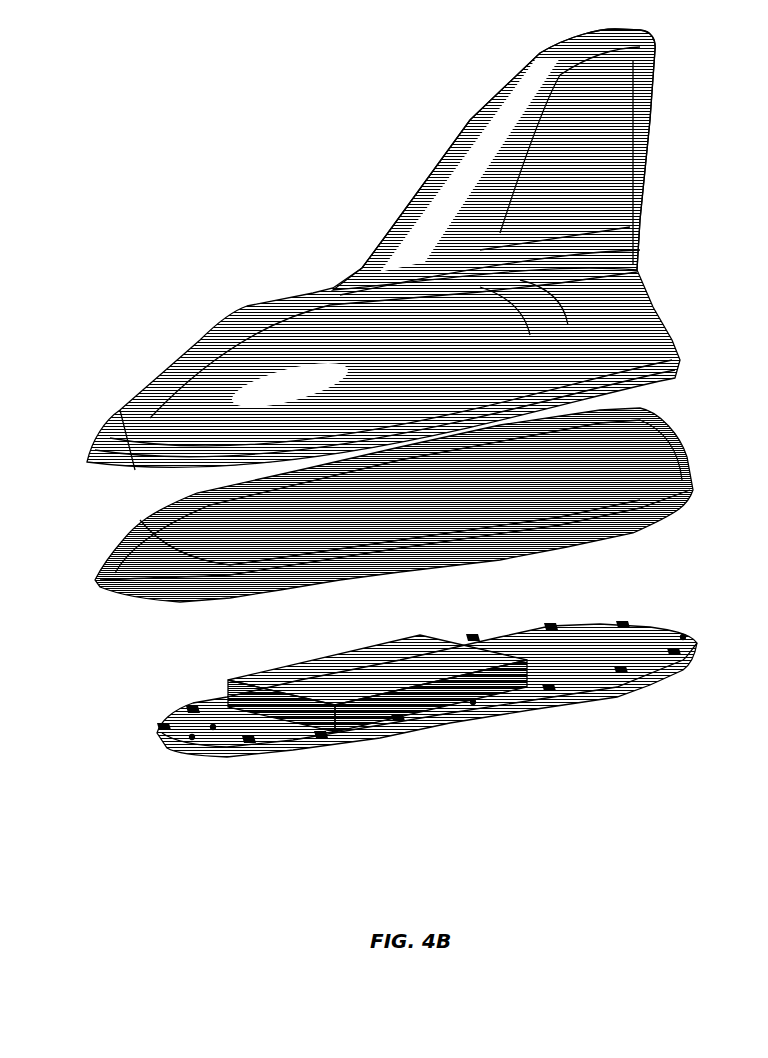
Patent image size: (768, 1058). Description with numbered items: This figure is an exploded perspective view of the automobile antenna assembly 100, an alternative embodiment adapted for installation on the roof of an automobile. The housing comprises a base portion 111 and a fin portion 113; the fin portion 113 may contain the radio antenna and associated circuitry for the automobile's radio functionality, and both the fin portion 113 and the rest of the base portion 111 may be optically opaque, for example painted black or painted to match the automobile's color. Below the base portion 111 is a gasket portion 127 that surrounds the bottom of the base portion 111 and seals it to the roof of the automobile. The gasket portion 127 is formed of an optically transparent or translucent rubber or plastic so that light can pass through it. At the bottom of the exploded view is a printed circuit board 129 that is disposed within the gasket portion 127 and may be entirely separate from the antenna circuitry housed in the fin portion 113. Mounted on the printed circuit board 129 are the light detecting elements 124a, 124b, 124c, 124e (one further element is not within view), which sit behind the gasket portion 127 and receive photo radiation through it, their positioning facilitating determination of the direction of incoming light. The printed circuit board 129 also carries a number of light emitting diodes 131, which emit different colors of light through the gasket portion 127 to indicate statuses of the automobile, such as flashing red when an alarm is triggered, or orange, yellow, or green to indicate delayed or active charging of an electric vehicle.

The automobile antenna assembly 100 is at (222, 126).
The base portion 111 is at (200, 340).
The fin portion 113 is at (613, 130).
The gasket portion 127 is at (112, 557).
The printed circuit board 129 is at (433, 722).
The light detecting element 124a is at (213, 730).
The light detecting element 124b is at (685, 634).
The light detecting element 124c is at (475, 704).
The light detecting element 124e is at (190, 739).
The light emitting diodes 131 is at (475, 635).